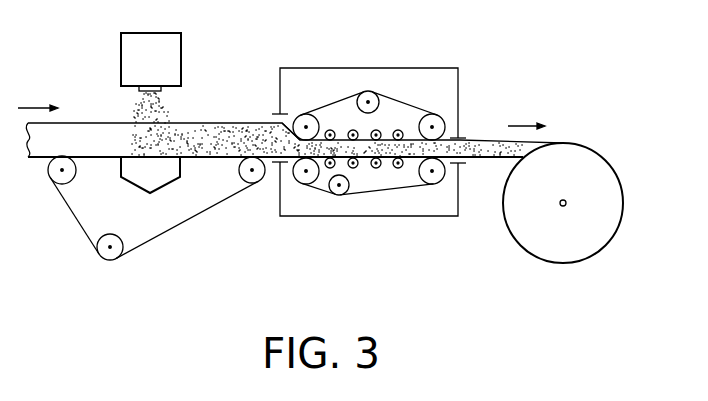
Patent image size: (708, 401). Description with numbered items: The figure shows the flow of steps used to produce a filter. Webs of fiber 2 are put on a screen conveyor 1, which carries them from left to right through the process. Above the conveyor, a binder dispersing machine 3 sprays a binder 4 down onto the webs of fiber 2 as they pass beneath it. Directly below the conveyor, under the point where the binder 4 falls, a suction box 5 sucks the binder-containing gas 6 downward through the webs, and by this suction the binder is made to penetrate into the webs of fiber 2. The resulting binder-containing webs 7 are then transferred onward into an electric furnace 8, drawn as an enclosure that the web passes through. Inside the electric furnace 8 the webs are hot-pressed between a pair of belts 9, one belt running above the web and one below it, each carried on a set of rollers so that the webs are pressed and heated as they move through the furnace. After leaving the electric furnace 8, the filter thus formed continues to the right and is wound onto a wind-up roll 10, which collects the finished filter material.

The screen conveyor 1 is at (73, 221).
The webs of fiber 2 is at (89, 131).
The binder dispersing machine 3 is at (181, 52).
The binder 4 is at (127, 70).
The suction box 5 is at (166, 177).
The binder-containing gas 6 is at (160, 108).
The binder-containing webs 7 is at (253, 125).
The electric furnace 8 is at (315, 80).
The pair of belts 9 is at (398, 100).
The wind-up roll 10 is at (604, 214).